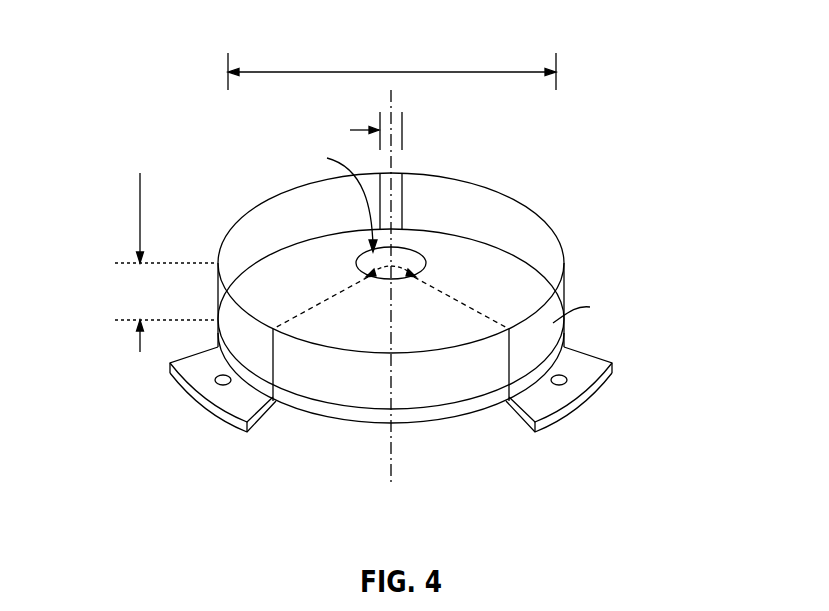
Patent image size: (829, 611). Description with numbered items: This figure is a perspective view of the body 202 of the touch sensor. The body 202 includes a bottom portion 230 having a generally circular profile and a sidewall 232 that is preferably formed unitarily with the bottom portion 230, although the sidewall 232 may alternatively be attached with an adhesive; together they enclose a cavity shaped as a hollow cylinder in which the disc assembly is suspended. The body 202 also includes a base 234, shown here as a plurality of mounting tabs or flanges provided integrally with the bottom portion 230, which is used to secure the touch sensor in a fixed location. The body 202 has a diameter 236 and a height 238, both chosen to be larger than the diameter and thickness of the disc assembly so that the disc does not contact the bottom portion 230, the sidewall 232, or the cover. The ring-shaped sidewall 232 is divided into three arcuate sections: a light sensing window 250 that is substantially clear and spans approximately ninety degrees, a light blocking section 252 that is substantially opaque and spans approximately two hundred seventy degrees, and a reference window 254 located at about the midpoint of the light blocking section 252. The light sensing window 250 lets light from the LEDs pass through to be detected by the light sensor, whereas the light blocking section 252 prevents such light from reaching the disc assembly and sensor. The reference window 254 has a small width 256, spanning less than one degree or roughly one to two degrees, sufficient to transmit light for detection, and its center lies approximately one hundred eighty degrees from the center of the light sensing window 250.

The body 202 is at (583, 123).
The bottom portion 230 is at (523, 302).
The sidewall 232 is at (338, 400).
The base 234 is at (587, 372).
The diameter 236 is at (390, 72).
The height 238 is at (140, 242).
The light sensing window 250 is at (472, 372).
The light blocking section 252 is at (541, 247).
The reference window 254 is at (393, 183).
The width 256 is at (368, 121).